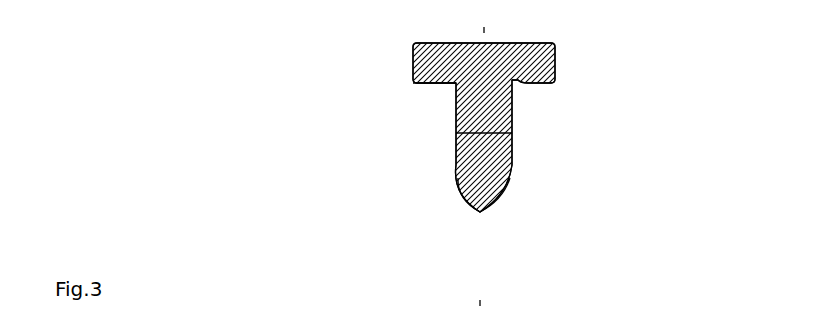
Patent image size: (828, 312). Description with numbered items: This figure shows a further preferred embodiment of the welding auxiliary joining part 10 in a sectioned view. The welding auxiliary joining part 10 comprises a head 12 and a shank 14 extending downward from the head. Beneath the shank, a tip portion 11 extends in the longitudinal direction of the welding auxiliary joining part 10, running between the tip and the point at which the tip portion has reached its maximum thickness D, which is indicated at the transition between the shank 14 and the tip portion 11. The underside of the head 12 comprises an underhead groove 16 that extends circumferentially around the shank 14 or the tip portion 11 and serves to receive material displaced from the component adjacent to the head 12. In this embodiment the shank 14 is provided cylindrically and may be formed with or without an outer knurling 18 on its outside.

The welding auxiliary joining part 10 is at (706, 22).
The head 12 is at (555, 56).
The underhead groove 16 is at (450, 85).
The outer knurling 18 is at (513, 103).
The maximum thickness D is at (457, 148).
The shank 14 is at (510, 152).
The tip portion 11 is at (497, 185).